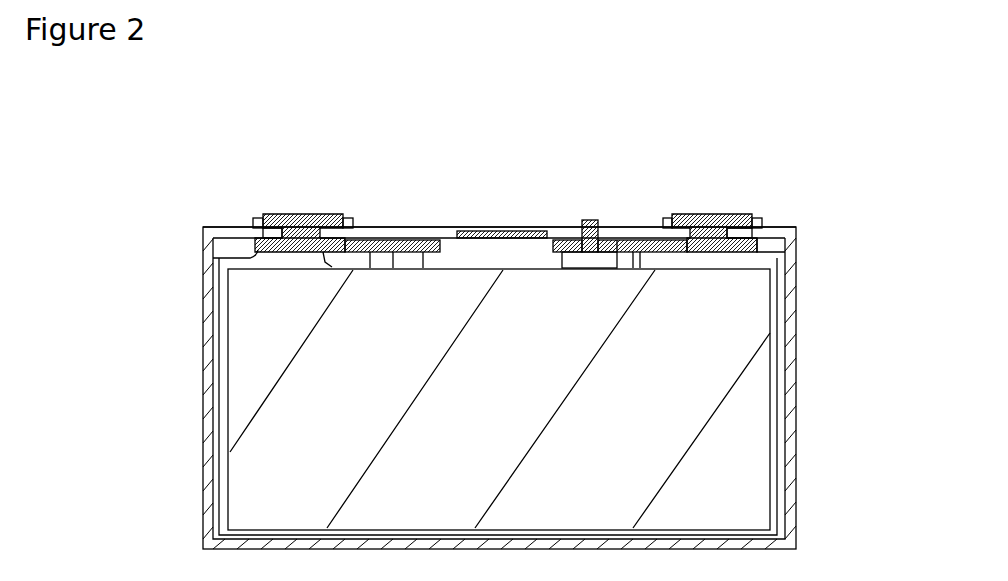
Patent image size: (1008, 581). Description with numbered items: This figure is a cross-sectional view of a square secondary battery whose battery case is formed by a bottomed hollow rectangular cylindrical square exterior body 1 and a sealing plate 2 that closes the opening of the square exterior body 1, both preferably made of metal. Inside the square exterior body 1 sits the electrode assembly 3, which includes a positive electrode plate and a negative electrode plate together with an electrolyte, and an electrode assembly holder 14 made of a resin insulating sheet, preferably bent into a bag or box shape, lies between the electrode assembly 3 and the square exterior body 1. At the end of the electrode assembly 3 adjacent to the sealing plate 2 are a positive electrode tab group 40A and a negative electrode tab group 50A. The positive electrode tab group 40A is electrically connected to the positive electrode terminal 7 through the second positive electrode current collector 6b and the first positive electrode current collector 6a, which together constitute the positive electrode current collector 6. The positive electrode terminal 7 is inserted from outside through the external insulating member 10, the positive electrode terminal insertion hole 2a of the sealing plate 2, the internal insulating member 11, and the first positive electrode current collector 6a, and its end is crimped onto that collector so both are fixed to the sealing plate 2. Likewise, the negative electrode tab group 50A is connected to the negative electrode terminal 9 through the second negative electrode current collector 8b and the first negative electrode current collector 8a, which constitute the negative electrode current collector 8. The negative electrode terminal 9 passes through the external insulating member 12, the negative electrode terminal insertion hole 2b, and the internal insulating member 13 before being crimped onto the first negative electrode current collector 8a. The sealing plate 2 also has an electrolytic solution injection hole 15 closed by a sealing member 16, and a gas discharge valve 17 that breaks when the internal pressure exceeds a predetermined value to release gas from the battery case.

The square exterior body 1 is at (797, 405).
The sealing plate 2 is at (441, 236).
The positive electrode terminal insertion hole 2a is at (758, 228).
The negative electrode terminal insertion hole 2b is at (258, 232).
The electrode assembly 3 is at (243, 484).
The positive electrode current collector 6 is at (633, 268).
The first positive electrode current collector 6a is at (775, 247).
The second positive electrode current collector 6b is at (633, 240).
The positive electrode terminal 7 is at (705, 213).
The negative electrode current collector 8 is at (328, 260).
The first negative electrode current collector 8a is at (213, 258).
The second negative electrode current collector 8b is at (372, 245).
The negative electrode terminal 9 is at (300, 213).
The external insulating member 10 is at (757, 216).
The internal insulating member 11 is at (620, 245).
The external insulating member 12 is at (262, 216).
The internal insulating member 13 is at (428, 245).
The electrode assembly holder 14 is at (783, 449).
The electrolytic solution injection hole 15 is at (562, 240).
The sealing member 16 is at (592, 220).
The gas discharge valve 17 is at (502, 236).
The positive electrode tab group 40A is at (580, 240).
The negative electrode tab group 50A is at (403, 245).